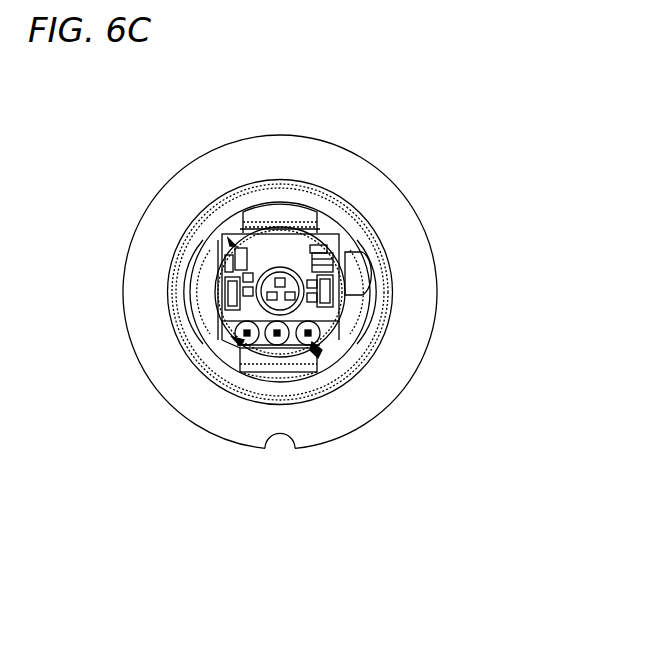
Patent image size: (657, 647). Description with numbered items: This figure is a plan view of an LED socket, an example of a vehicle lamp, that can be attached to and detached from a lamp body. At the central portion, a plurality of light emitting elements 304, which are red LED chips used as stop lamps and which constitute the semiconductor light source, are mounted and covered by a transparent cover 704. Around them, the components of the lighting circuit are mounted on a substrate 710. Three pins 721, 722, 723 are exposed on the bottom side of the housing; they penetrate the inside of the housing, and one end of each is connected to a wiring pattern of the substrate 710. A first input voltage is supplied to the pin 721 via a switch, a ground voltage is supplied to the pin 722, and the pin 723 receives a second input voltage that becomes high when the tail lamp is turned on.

The substrate 710 is at (265, 249).
The transparent cover 704 is at (292, 263).
The light emitting elements 304 is at (276, 262).
The pin 721 is at (316, 353).
The pin 722 is at (290, 343).
The pin 723 is at (243, 340).